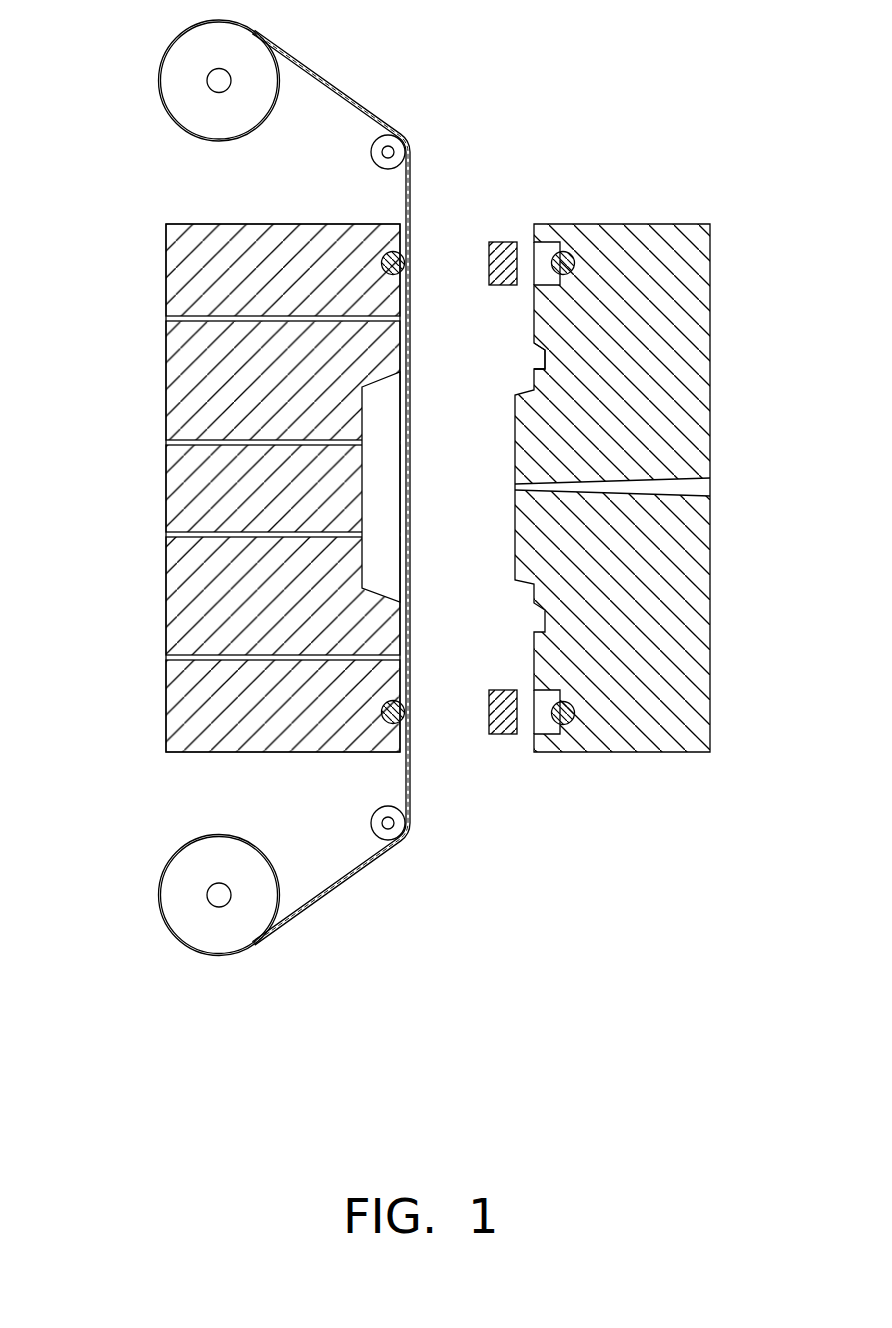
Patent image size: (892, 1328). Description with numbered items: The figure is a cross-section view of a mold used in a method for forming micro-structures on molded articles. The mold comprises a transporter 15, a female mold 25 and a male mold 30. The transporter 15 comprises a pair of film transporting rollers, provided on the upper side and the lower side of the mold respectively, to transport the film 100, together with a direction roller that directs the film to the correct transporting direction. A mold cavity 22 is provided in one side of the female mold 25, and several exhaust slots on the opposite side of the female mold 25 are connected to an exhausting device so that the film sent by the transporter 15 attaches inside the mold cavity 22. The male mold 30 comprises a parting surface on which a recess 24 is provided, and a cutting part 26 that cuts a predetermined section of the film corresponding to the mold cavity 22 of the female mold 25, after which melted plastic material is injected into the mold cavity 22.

The film 100 is at (350, 97).
The transporter 15 is at (298, 481).
The female mold 25 is at (282, 488).
The mold cavity 22 is at (378, 448).
The male mold 30 is at (624, 488).
The recess 24 is at (540, 353).
The cutting part 26 is at (543, 367).